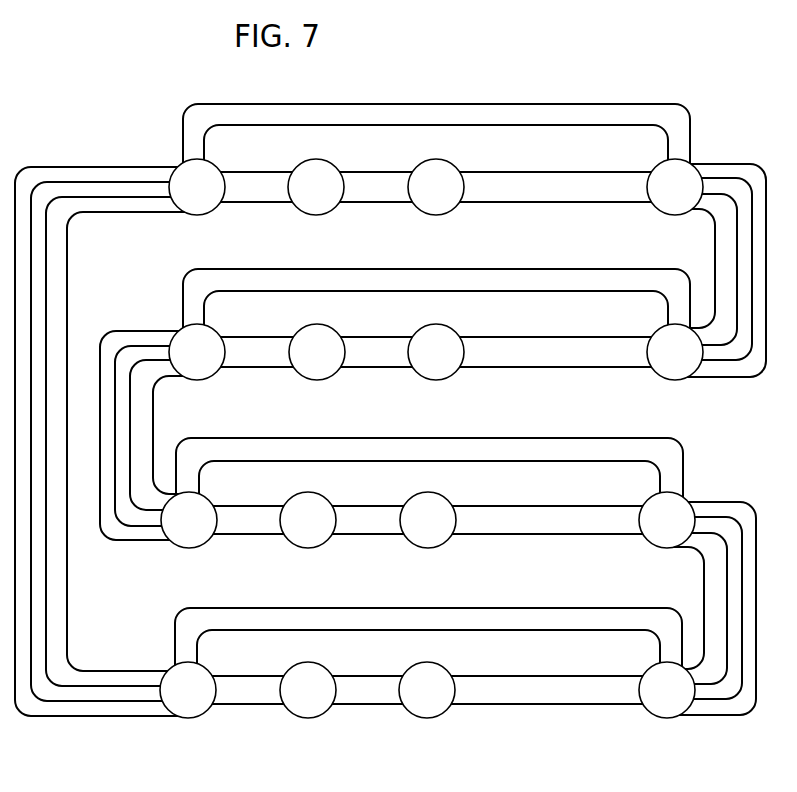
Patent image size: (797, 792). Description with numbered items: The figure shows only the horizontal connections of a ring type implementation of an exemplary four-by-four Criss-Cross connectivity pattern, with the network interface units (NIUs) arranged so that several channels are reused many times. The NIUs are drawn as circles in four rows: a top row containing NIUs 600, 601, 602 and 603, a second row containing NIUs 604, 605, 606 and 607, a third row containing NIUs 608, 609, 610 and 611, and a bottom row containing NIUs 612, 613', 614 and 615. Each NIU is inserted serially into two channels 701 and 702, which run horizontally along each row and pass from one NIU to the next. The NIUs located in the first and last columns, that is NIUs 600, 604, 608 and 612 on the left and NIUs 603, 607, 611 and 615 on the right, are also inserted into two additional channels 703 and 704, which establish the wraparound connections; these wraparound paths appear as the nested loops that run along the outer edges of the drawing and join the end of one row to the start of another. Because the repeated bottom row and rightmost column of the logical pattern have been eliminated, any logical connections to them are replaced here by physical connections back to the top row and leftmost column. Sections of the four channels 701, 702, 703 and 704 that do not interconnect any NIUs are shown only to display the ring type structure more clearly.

The processing node 600 is at (197, 187).
The processing node 601 is at (316, 187).
The processing node 602 is at (436, 187).
The processing node 603 is at (675, 187).
The processing node 604 is at (197, 352).
The processing node 605 is at (317, 352).
The processing node 606 is at (436, 352).
The processing node 607 is at (675, 352).
The processing node 608 is at (189, 520).
The processing node 609 is at (308, 520).
The processing node 610 is at (428, 520).
The processing node 611 is at (667, 520).
The processing node 612 is at (188, 690).
The processing node 613' is at (308, 690).
The processing node 614 is at (427, 690).
The processing node 615 is at (667, 690).
The channel 701 is at (360, 506).
The channel 702 is at (360, 535).
The additional channel 703 is at (358, 631).
The additional channel 704 is at (345, 607).